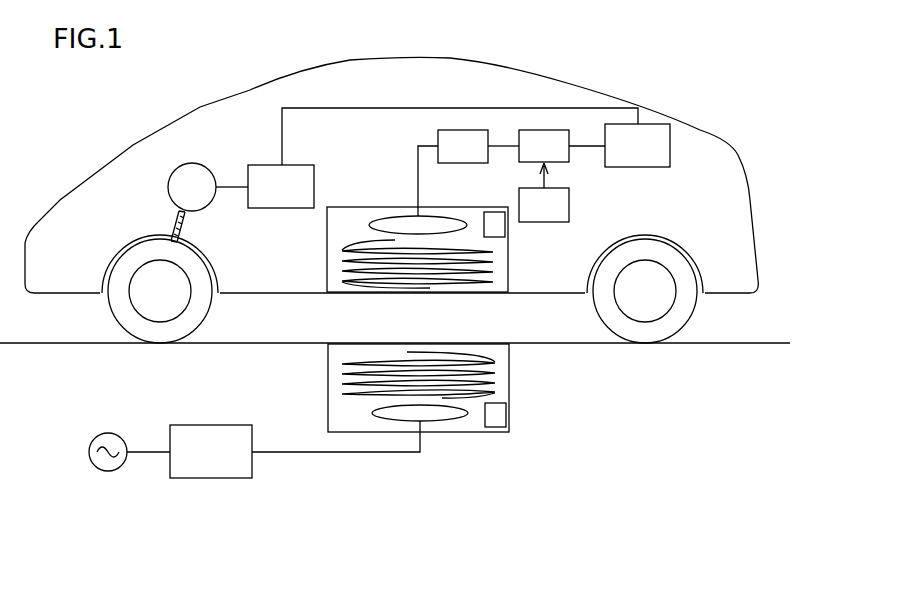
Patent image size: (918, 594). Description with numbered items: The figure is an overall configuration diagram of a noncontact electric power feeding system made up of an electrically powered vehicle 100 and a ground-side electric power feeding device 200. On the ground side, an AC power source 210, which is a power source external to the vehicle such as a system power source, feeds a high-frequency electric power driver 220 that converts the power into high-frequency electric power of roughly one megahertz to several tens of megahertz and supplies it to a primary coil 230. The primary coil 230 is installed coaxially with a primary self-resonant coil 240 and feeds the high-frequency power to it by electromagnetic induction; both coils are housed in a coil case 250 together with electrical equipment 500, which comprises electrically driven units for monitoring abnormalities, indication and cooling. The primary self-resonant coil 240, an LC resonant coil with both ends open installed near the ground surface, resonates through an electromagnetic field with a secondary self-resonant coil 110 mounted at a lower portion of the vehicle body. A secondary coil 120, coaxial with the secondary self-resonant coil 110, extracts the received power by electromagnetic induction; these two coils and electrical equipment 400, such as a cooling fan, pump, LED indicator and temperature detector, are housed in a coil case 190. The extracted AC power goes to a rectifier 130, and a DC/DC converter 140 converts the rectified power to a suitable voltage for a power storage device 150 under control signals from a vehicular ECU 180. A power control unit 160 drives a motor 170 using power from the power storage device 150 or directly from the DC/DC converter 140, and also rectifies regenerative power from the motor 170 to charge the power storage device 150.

The electrically powered vehicle 100 is at (478, 59).
The secondary self-resonant coil 110 is at (342, 272).
The secondary coil 120 is at (393, 215).
The rectifier 130 is at (463, 165).
The DC/DC converter 140 is at (555, 163).
The power storage device 150 is at (670, 147).
The power control unit 160 is at (256, 165).
The motor 170 is at (167, 190).
The vehicular ECU 180 is at (569, 207).
The coil case 190 is at (327, 233).
The electric power feeding device 200 is at (333, 495).
The AC power source 210 is at (110, 430).
The high-frequency electric power driver 220 is at (212, 425).
The primary coil 230 is at (445, 420).
The primary self-resonant coil 240 is at (342, 378).
The coil case 250 is at (328, 415).
The electrical equipment 400 is at (505, 232).
The electrical equipment 500 is at (506, 415).